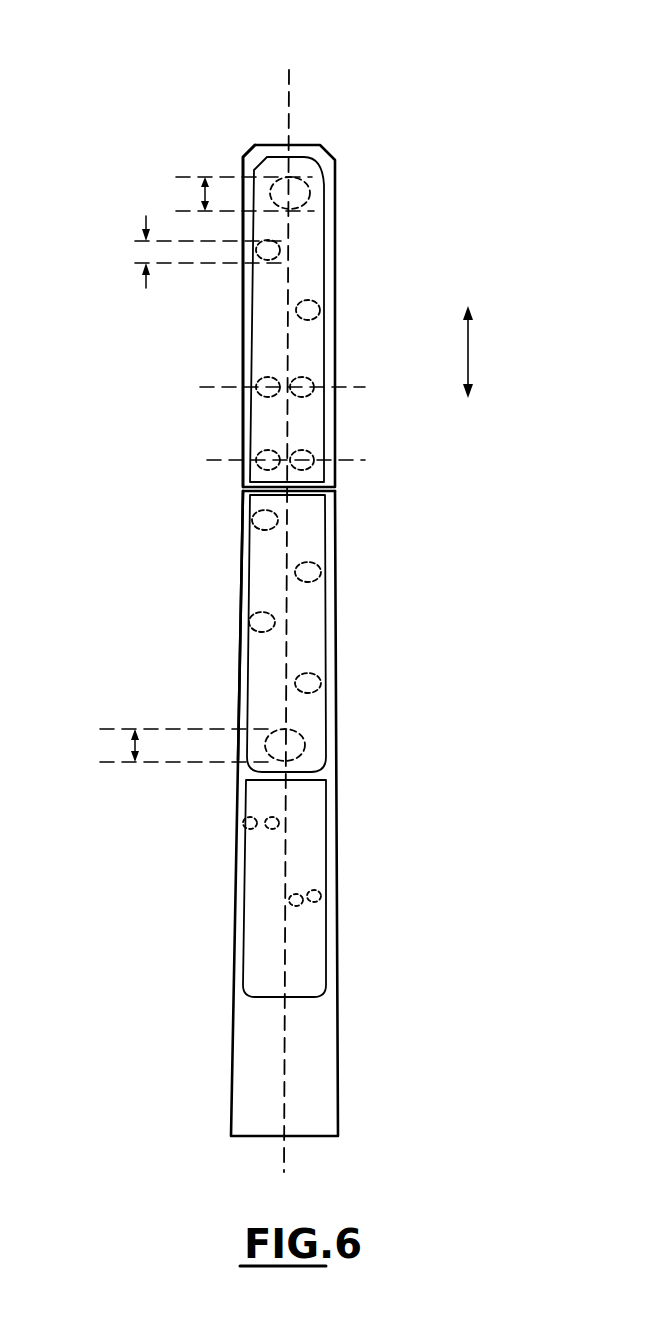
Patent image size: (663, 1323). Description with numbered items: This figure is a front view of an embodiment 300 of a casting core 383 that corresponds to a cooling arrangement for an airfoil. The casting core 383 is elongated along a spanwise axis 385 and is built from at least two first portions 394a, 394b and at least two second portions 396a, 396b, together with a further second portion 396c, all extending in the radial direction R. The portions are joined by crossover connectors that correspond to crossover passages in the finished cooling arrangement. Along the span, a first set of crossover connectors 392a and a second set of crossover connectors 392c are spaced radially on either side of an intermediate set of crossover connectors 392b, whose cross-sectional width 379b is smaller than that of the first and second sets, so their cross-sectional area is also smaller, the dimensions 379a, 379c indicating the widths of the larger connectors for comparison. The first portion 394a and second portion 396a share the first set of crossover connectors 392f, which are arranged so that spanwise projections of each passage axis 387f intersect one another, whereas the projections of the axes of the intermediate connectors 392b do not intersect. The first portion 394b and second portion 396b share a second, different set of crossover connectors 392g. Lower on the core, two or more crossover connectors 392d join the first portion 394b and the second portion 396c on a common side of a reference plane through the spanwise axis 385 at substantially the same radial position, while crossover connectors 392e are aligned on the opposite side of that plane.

The embodiment 300 is at (405, 108).
The casting core 383 is at (137, 72).
The spanwise axis 385 is at (285, 1033).
The first spacing 379a is at (203, 190).
The cross-sectional width 379b is at (146, 218).
The third spacing 379c is at (133, 745).
The passage axis 387f is at (384, 387).
The first set of crossover connectors 392a is at (310, 193).
The intermediate set of crossover connectors 392b is at (280, 249).
The second set of crossover connectors 392c is at (305, 746).
The crossover connectors 392d is at (270, 832).
The crossover connectors 392e is at (318, 910).
The first set of crossover connectors 392f is at (300, 462).
The second set of crossover connectors 392g is at (276, 622).
The first portion 394a is at (244, 327).
The first portion 394b is at (241, 592).
The second portion 396a is at (242, 441).
The second portion 396b is at (247, 657).
The second portion 396c is at (241, 917).
The radial direction R is at (470, 352).